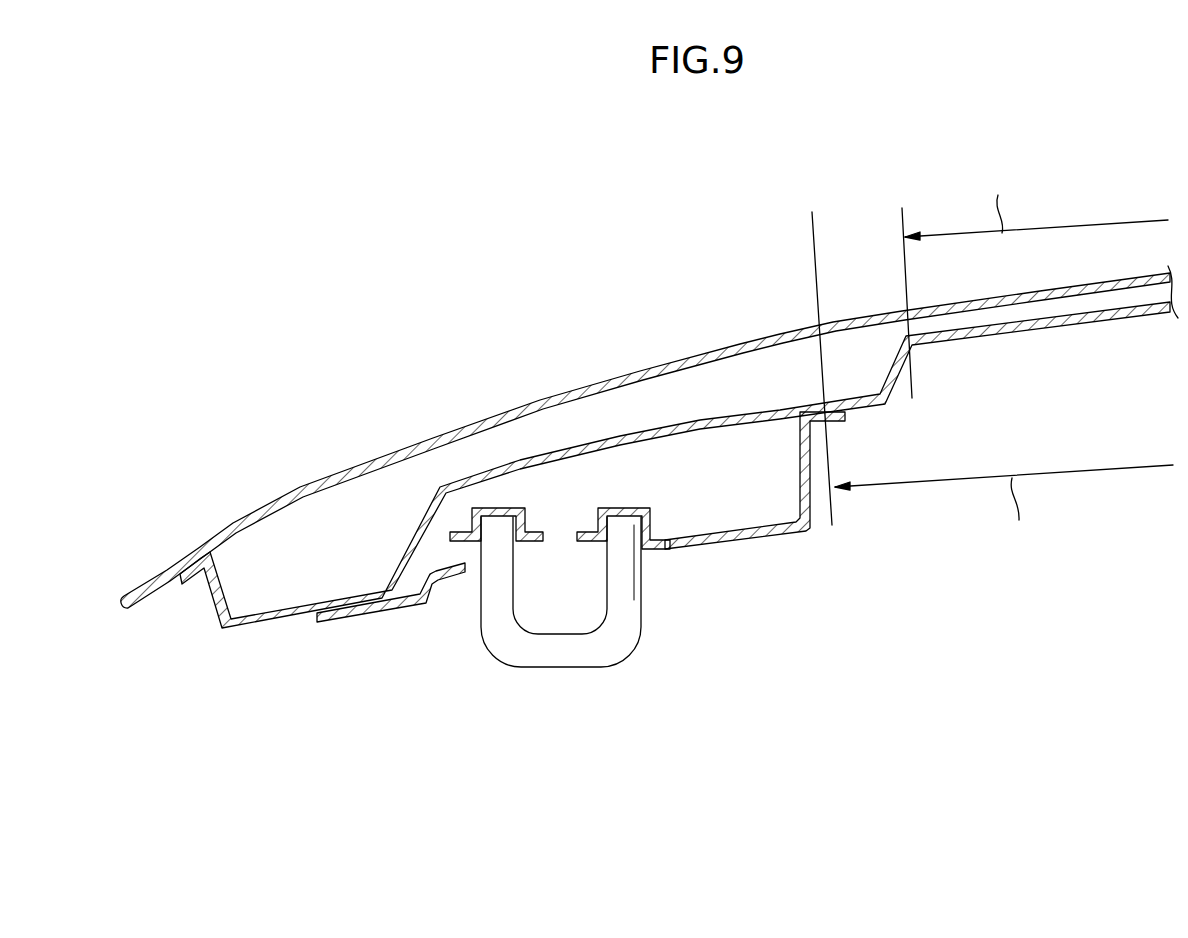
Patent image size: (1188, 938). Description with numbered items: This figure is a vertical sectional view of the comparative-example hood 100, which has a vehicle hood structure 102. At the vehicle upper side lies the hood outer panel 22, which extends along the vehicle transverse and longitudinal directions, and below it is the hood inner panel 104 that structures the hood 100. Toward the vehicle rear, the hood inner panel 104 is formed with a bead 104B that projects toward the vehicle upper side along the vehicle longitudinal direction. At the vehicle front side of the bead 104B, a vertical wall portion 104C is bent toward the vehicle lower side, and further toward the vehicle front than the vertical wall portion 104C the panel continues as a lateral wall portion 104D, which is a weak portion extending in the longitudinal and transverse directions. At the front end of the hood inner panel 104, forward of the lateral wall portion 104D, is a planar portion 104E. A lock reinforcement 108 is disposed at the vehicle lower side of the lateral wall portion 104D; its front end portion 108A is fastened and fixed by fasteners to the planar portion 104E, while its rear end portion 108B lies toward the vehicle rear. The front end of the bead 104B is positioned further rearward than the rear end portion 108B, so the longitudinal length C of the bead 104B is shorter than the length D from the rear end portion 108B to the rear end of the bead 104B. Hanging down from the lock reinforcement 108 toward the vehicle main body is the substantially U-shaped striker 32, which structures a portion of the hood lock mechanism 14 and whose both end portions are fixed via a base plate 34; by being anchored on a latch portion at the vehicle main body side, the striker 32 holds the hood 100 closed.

The hood 100 is at (771, 205).
The vehicle hood structure 102 is at (737, 310).
The hood outer panel 22 is at (505, 410).
The hood inner panel 104 is at (660, 432).
The bead 104B is at (1075, 315).
The vertical wall portion 104C is at (897, 371).
The lateral wall portion 104D is at (583, 452).
The planar portion 104E is at (300, 606).
The lock reinforcement 108 is at (760, 537).
The front end portion 108A is at (366, 622).
The rear end portion 108B is at (837, 421).
The hood lock mechanism 14 is at (488, 658).
The striker 32 is at (627, 607).
The base plate 34 is at (633, 506).